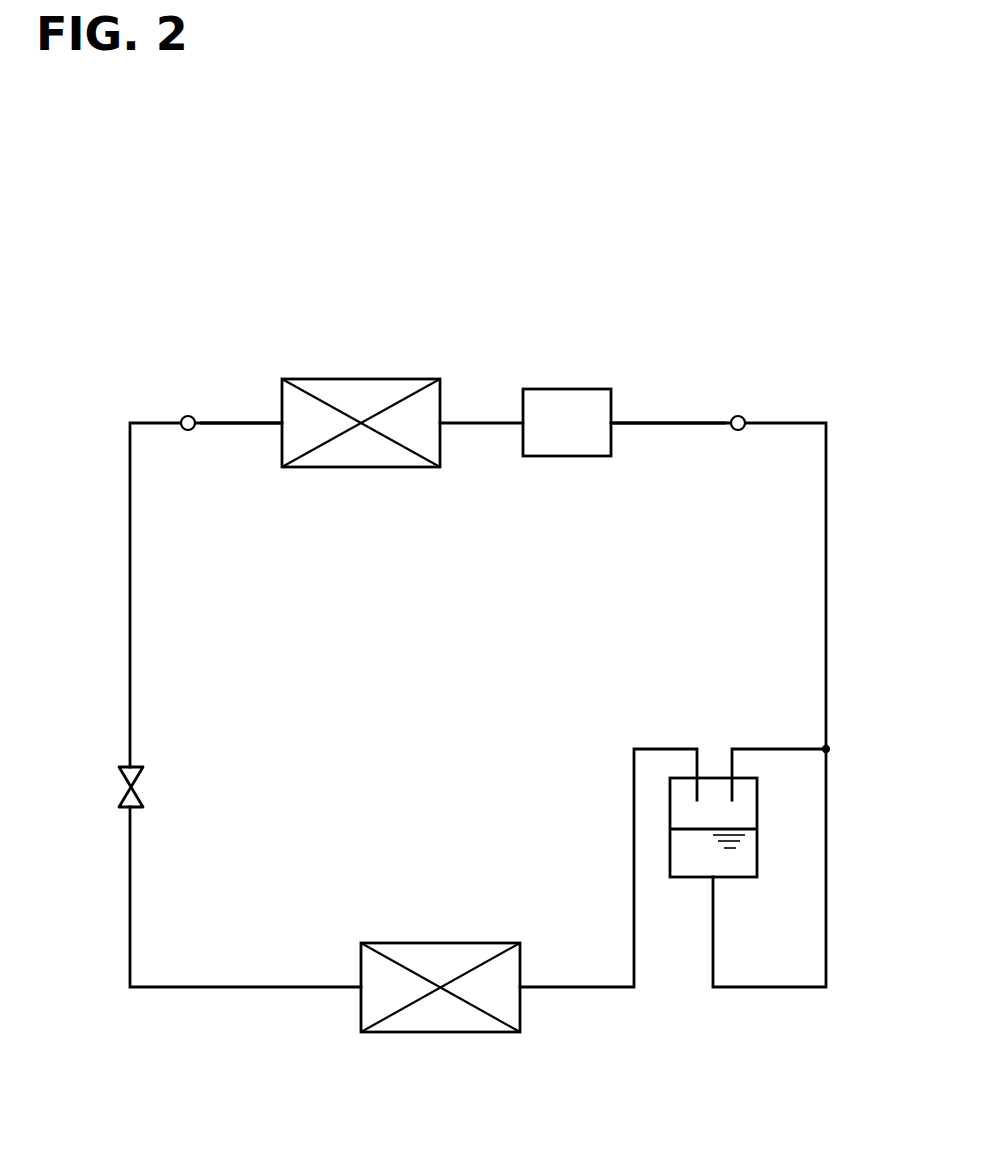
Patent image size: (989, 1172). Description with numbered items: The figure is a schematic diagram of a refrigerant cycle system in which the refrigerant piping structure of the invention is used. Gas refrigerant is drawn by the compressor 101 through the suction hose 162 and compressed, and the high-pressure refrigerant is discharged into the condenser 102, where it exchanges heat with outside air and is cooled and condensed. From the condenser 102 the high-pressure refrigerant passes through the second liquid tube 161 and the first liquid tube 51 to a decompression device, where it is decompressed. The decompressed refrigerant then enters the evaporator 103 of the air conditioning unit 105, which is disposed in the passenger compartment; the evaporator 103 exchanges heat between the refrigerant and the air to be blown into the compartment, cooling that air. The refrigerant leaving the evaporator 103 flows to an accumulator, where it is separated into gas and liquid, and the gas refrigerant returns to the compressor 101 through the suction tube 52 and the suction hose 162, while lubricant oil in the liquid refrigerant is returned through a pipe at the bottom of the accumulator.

The first liquid tube 51 is at (152, 423).
The suction tube 52 is at (790, 423).
The compressor 101 is at (578, 389).
The condenser 102 is at (370, 379).
The evaporator 103 is at (400, 1032).
The air conditioning unit 105 is at (536, 1041).
The second liquid tube 161 is at (237, 423).
The suction hose 162 is at (700, 423).